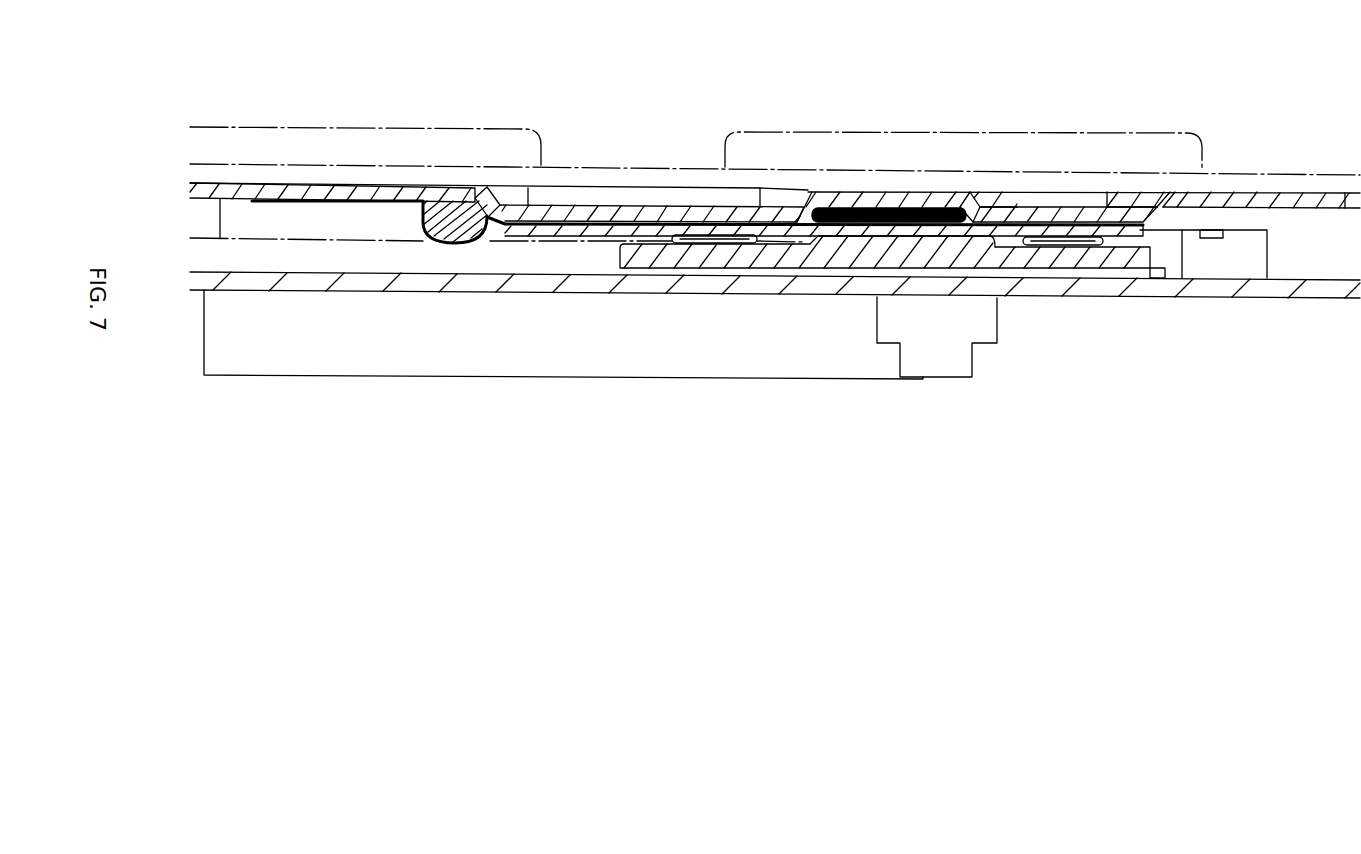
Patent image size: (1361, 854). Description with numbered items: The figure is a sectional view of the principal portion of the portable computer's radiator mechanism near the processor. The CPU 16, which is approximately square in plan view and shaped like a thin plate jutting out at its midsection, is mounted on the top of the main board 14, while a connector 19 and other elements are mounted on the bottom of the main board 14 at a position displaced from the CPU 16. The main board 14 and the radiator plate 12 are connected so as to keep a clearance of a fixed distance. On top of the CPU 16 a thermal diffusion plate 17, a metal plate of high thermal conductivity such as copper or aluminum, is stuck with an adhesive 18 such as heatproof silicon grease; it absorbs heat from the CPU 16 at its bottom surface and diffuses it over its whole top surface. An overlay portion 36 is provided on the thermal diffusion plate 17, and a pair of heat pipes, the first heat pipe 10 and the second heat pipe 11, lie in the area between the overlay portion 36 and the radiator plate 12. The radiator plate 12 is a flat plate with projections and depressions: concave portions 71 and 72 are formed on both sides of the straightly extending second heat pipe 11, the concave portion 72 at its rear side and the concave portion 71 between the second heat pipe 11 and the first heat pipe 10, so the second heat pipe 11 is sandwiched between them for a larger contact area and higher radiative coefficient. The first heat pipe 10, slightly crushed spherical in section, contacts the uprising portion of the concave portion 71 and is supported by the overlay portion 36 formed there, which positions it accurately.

The first heat pipe 10 is at (375, 222).
The second heat pipe 11 is at (902, 212).
The radiator plate 12 is at (1242, 197).
The main board 14 is at (1271, 290).
The CPU 16 is at (827, 257).
The thermal diffusion plate 17 is at (1157, 235).
The adhesive 18 is at (720, 243).
The connector 19 is at (488, 363).
The overlay portion 36 is at (302, 198).
The concave portion 71 is at (632, 207).
The concave portion 72 is at (1063, 210).